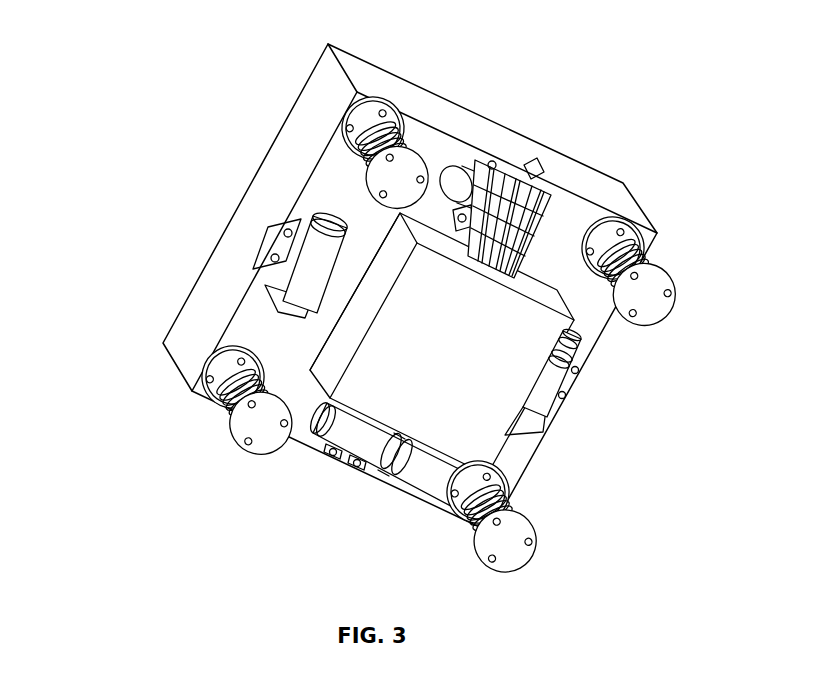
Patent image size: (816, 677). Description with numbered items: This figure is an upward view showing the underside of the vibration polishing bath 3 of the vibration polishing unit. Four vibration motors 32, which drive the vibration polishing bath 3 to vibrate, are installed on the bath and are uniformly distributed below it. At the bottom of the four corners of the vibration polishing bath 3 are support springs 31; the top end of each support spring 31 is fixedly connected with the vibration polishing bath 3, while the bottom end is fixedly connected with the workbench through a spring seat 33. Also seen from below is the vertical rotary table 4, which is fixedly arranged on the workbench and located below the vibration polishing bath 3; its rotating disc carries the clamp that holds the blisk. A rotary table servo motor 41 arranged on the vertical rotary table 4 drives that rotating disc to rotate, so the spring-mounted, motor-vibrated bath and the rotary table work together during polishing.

The vibration polishing bath 3 is at (238, 257).
The support spring 31 is at (215, 396).
The vibration motor 32 is at (370, 440).
The spring seat 33 is at (257, 430).
The vertical rotary table 4 is at (487, 387).
The rotary table servo motor 41 is at (510, 232).